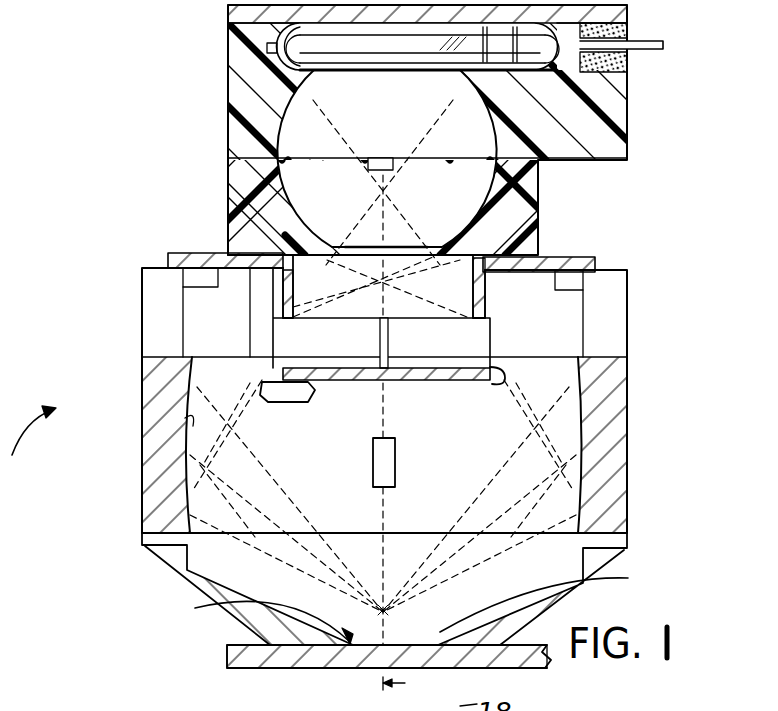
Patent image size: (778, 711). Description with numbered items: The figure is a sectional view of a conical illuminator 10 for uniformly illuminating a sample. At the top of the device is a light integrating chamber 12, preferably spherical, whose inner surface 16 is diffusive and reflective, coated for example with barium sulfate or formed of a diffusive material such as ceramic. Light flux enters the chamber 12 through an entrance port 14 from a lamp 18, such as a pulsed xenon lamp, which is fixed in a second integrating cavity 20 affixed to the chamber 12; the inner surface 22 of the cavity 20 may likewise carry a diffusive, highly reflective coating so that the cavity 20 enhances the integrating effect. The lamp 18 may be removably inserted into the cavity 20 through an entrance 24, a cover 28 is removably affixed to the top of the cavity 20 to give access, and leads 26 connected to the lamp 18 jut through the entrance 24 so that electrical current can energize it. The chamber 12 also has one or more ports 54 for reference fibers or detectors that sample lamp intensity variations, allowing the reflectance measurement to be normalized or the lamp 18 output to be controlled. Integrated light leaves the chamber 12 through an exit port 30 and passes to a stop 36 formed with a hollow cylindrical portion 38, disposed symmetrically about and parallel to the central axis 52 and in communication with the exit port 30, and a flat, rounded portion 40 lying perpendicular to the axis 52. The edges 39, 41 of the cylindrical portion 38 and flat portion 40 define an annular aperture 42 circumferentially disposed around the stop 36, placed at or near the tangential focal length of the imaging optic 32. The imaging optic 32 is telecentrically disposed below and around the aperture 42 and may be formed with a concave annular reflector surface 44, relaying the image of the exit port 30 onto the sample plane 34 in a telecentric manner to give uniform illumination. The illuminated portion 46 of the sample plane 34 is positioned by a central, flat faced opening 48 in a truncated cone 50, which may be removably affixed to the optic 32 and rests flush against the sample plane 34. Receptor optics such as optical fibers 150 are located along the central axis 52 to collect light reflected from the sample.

The conical illuminator 10 is at (28, 451).
The light integrating chamber 12 is at (250, 150).
The entrance port 14 is at (320, 100).
The inner surface 16 is at (250, 143).
The lamp 18 is at (297, 25).
The second integrating cavity 20 is at (262, 57).
The inner surface 22 is at (268, 34).
The entrance 24 is at (663, 40).
The leads 26 is at (648, 52).
The cover 28 is at (627, 14).
The exit port 30 is at (385, 246).
The imaging optic 32 is at (157, 425).
The sample plane 34 is at (227, 663).
The stop 36 is at (493, 353).
The cylindrical portion 38 is at (262, 252).
The edge 39 is at (477, 317).
The flat rounded portion 40 is at (283, 378).
The edge 41 is at (500, 392).
The annular aperture 42 is at (297, 335).
The concave annular reflector surface 44 is at (188, 422).
The illuminated portion 46 is at (215, 606).
The flat faced opening 48 is at (628, 578).
The truncated cone 50 is at (535, 620).
The central axis 52 is at (415, 687).
The port 54 is at (383, 158).
The optical fibers 150 is at (392, 457).